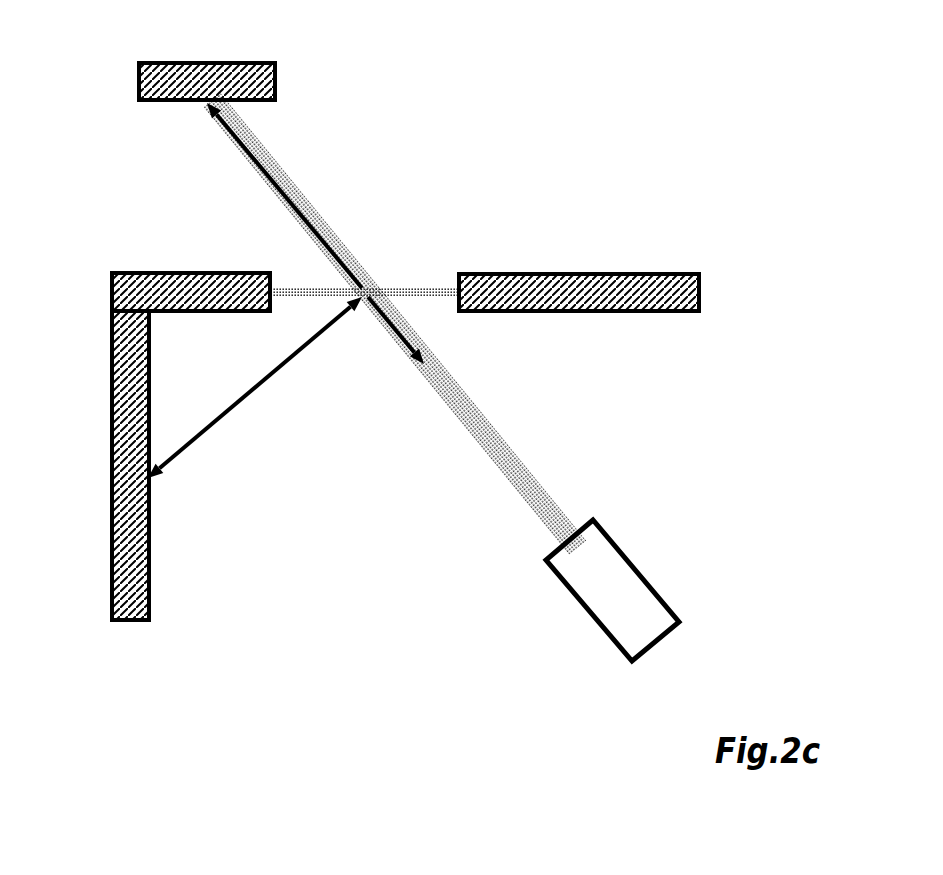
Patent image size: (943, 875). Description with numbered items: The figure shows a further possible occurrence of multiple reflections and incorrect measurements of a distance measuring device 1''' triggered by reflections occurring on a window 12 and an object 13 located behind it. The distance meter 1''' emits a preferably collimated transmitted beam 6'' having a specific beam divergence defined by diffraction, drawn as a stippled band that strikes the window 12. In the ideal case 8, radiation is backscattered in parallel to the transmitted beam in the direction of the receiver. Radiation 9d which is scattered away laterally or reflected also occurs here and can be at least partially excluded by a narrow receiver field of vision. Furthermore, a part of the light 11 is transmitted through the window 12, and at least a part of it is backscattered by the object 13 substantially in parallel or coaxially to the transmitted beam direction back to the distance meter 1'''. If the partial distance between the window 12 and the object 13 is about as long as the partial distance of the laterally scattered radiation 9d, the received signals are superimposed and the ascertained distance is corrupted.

The object located behind the window 13 is at (152, 52).
The window 12 is at (524, 159).
The ideal case backscatter 8 is at (610, 225).
The transmitted part of the light 11 is at (197, 195).
The laterally scattered or reflected radiation 9d is at (193, 387).
The transmitted beam 6'' is at (494, 324).
The distance measuring device 1''' is at (668, 573).